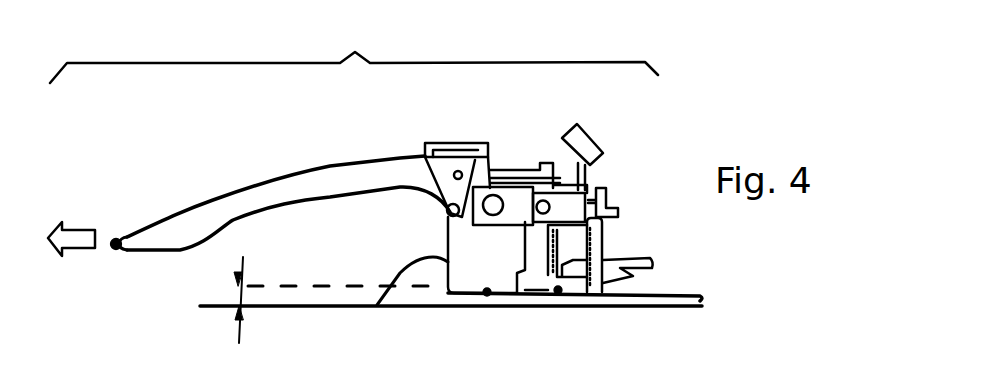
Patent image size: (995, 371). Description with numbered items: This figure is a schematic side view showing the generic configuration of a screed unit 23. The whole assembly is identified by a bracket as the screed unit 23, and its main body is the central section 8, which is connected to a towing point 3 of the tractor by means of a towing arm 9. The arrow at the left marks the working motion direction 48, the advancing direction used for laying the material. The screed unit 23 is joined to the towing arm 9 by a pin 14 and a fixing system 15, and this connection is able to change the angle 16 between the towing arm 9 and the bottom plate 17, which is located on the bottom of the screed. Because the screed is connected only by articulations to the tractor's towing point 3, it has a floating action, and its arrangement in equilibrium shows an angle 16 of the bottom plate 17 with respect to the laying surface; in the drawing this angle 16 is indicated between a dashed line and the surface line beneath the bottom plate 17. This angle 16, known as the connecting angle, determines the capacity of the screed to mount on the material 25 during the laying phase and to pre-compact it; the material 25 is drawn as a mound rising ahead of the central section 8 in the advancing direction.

The towing point 3 is at (117, 240).
The central section 8 is at (533, 235).
The towing arm 9 is at (257, 187).
The pin 14 is at (453, 208).
The fixing system 15 is at (458, 138).
The angle 16 is at (230, 294).
The bottom plate 17 is at (558, 290).
The screed unit 23 is at (354, 54).
The material 25 is at (402, 277).
The working motion direction 48 is at (78, 233).